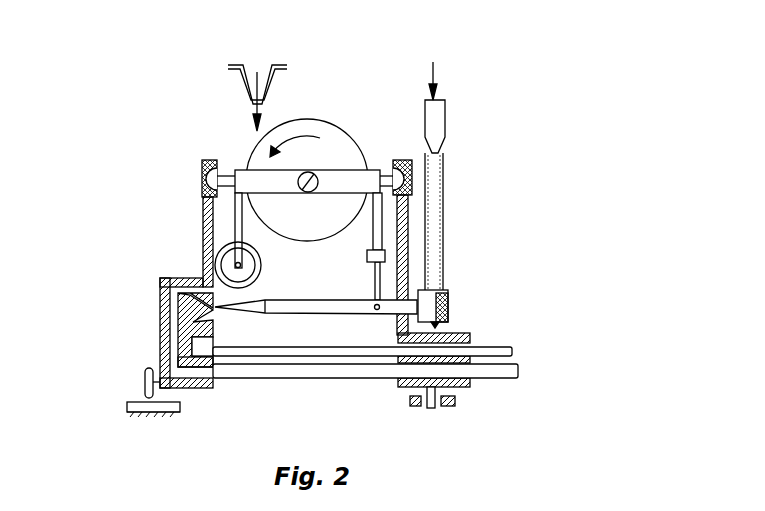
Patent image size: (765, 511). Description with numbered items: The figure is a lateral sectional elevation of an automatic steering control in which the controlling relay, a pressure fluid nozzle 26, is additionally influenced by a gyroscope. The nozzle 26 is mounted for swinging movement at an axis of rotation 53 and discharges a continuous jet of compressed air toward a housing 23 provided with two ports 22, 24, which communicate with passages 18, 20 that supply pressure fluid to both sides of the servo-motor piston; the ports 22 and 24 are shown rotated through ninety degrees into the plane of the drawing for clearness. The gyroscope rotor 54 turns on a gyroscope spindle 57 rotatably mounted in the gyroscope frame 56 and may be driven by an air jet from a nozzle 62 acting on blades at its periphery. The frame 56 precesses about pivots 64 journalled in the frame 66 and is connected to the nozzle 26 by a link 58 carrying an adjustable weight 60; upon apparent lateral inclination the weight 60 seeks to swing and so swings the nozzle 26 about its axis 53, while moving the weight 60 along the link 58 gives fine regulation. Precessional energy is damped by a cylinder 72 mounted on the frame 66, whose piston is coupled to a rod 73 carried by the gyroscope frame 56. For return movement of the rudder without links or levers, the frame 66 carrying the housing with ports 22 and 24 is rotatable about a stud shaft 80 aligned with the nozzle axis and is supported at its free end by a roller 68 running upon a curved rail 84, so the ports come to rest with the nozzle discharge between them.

The passage 18 is at (513, 372).
The passage 20 is at (487, 352).
The port 22 is at (173, 322).
The housing 23 is at (163, 283).
The port 24 is at (141, 311).
The nozzle 26 is at (238, 312).
The axis of rotation 53 is at (435, 122).
The gyroscope rotor 54 is at (314, 128).
The gyroscope frame 56 is at (363, 178).
The gyroscope spindle 57 is at (329, 108).
The link 58 is at (420, 246).
The weight 60 is at (435, 256).
The nozzle 62 is at (257, 66).
The pivots 64 is at (387, 175).
The frame 66 is at (278, 179).
The supporting roller 68 is at (147, 382).
The cylinder 72 is at (201, 260).
The rod 73 is at (238, 237).
The stud shaft 80 is at (423, 405).
The curved rail 84 is at (128, 410).